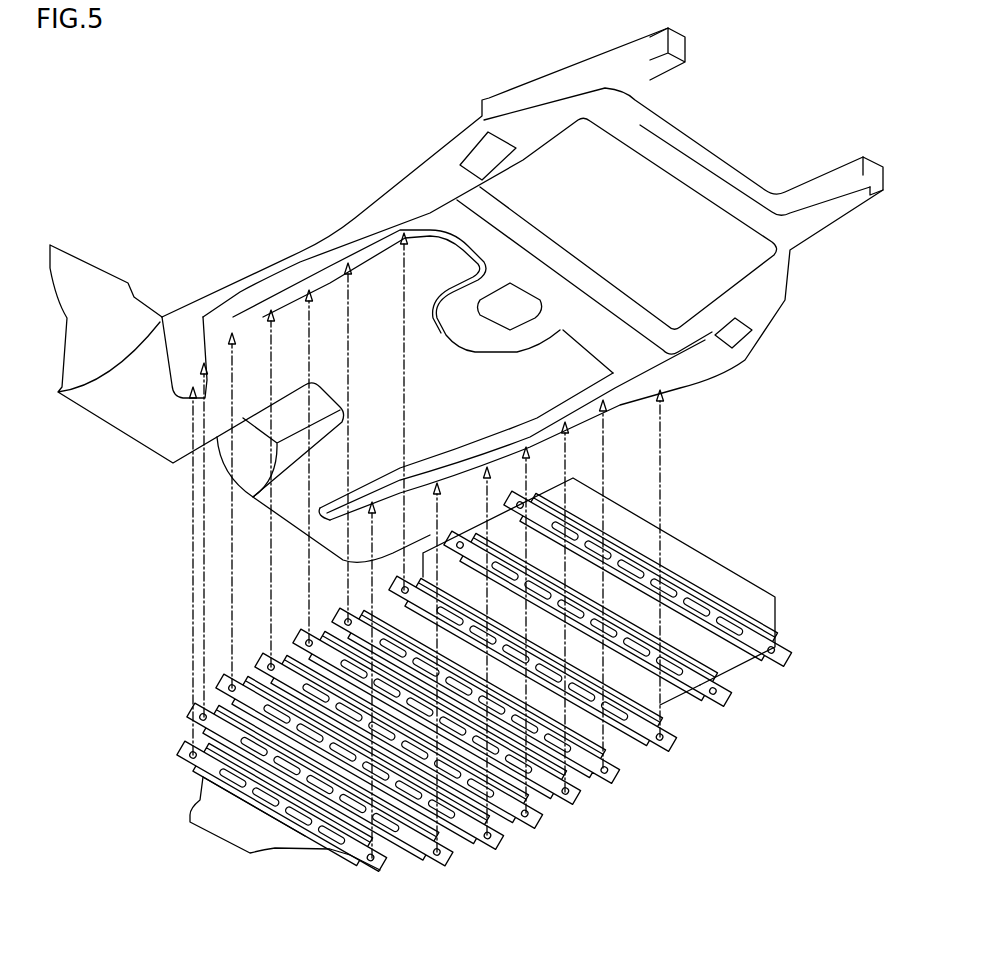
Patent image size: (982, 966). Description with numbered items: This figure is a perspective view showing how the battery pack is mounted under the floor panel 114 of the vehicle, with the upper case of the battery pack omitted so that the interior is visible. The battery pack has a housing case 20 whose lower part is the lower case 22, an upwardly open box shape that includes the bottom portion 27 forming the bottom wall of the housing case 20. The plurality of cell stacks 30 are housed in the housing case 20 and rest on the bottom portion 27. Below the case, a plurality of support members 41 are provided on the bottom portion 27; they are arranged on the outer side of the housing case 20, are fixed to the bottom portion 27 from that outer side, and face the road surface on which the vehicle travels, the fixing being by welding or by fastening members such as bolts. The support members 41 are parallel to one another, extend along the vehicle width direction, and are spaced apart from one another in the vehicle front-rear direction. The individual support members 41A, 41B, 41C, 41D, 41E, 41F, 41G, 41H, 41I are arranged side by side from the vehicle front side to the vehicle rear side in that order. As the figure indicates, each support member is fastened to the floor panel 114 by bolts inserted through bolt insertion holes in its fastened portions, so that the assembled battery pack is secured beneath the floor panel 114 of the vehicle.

The floor panel 114 is at (249, 268).
The cell stacks 30 is at (713, 585).
The bottom portion 27 is at (683, 717).
The housing case 20 is at (285, 863).
The lower case 22 is at (292, 870).
The support members 41 is at (513, 708).
The support member 41A is at (348, 850).
The support member 41B is at (417, 840).
The support member 41C is at (475, 830).
The support member 41D is at (535, 820).
The support member 41E is at (573, 797).
The support member 41F is at (612, 773).
The support member 41G is at (670, 740).
The support member 41H is at (700, 693).
The support member 41I is at (755, 665).